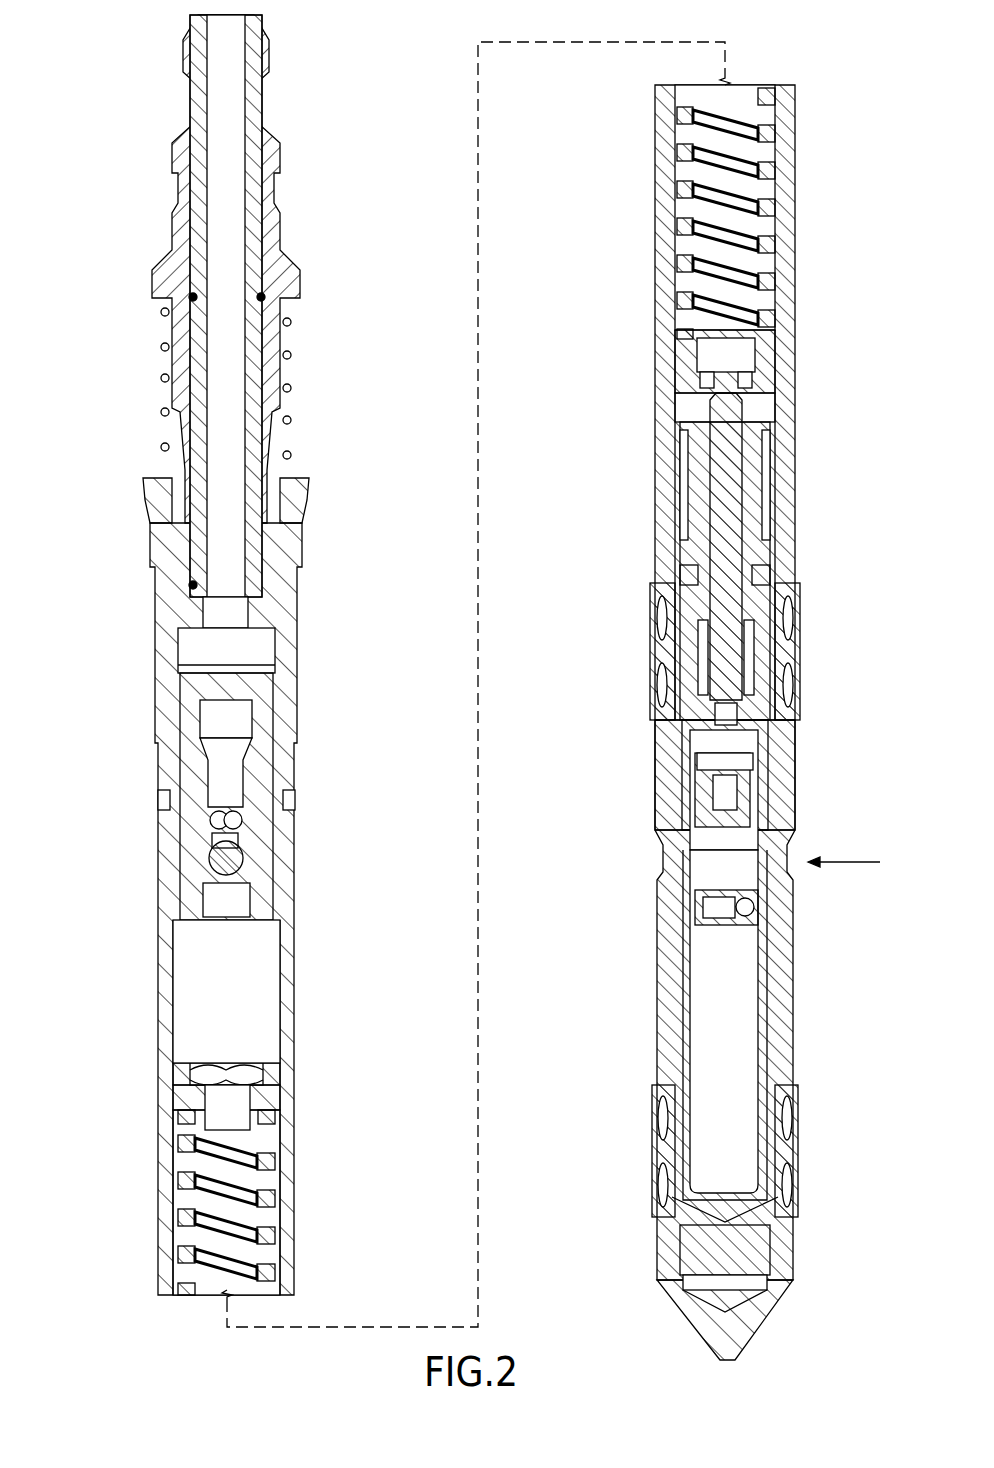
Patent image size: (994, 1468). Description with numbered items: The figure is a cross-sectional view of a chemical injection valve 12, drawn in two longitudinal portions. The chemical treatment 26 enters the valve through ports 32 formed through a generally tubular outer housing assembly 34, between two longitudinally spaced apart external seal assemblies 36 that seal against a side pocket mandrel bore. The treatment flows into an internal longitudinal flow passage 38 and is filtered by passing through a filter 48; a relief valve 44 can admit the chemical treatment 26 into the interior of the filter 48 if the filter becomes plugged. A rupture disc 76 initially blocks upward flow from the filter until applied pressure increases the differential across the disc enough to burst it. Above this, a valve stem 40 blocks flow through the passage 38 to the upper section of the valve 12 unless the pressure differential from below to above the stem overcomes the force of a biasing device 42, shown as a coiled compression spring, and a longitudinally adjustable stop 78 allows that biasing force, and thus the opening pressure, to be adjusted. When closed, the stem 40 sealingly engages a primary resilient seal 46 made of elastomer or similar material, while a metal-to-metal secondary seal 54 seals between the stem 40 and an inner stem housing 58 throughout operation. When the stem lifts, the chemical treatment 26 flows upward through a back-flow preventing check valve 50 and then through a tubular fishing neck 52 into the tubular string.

The chemical injection valve 12 is at (827, 92).
The chemical treatment 26 is at (880, 862).
The ports 32 is at (800, 840).
The outer housing assembly 34 is at (155, 930).
The external seal assemblies 36 is at (787, 665).
The internal longitudinal flow passage 38 is at (216, 1003).
The valve stem 40 is at (742, 410).
The biasing device 42 is at (180, 1142).
The relief valve 44 is at (758, 907).
The primary resilient seal 46 is at (762, 602).
The filter 48 is at (768, 1075).
The back-flow preventing check valve 50 is at (187, 873).
The tubular fishing neck 52 is at (192, 90).
The secondary seal 54 is at (740, 485).
The inner stem housing 58 is at (768, 509).
The rupture disc 76 is at (720, 815).
The longitudinally adjustable stop 78 is at (180, 1098).